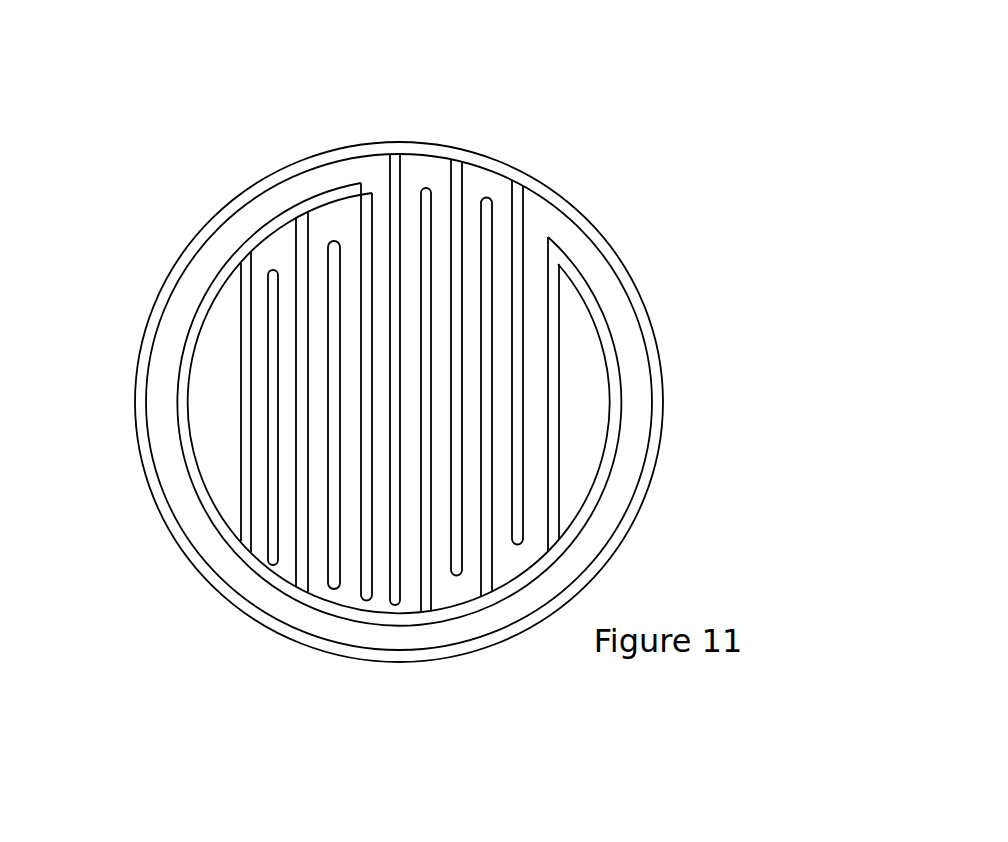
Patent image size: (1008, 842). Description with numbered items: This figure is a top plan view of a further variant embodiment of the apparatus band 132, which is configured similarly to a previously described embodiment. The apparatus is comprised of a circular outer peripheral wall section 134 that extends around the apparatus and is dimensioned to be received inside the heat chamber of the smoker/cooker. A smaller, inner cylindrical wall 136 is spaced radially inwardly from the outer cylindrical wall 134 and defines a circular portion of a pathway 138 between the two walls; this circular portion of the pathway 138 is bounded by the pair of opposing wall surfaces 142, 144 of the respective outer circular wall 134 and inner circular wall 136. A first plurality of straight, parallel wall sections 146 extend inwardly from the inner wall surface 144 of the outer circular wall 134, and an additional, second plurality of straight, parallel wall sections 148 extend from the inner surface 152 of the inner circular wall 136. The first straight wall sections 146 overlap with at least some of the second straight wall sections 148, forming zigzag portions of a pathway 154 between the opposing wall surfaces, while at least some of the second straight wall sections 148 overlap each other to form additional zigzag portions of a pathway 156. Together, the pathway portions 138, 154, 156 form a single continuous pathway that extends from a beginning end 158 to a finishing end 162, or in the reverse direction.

The apparatus band 132 is at (630, 268).
The outer peripheral wall section 134 is at (618, 240).
The inner cylindrical wall 136 is at (611, 321).
The circular portion of the pathway 138 is at (634, 405).
The wall surface 142 is at (632, 439).
The inner wall surface 144 is at (612, 492).
The first plurality of straight, parallel wall sections 146 is at (391, 162).
The second plurality of straight, parallel wall sections 148 is at (249, 261).
The inner surface 152 is at (199, 358).
The zigzag portions of a pathway 154 is at (380, 213).
The additional zigzag portions of a pathway 156 is at (290, 505).
The beginning end 158 is at (409, 588).
The finishing end 162 is at (291, 565).